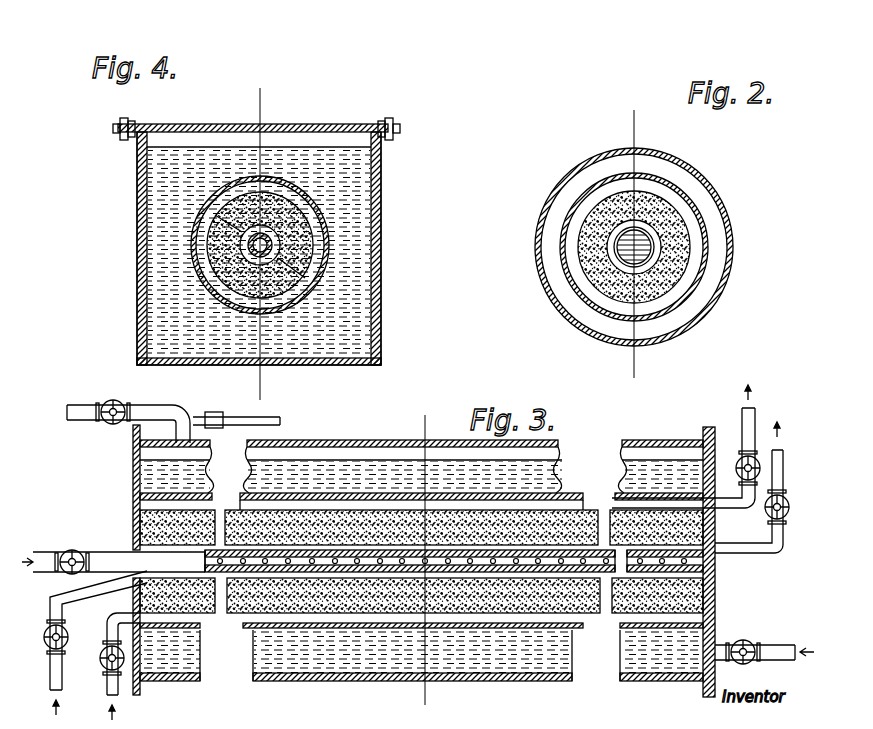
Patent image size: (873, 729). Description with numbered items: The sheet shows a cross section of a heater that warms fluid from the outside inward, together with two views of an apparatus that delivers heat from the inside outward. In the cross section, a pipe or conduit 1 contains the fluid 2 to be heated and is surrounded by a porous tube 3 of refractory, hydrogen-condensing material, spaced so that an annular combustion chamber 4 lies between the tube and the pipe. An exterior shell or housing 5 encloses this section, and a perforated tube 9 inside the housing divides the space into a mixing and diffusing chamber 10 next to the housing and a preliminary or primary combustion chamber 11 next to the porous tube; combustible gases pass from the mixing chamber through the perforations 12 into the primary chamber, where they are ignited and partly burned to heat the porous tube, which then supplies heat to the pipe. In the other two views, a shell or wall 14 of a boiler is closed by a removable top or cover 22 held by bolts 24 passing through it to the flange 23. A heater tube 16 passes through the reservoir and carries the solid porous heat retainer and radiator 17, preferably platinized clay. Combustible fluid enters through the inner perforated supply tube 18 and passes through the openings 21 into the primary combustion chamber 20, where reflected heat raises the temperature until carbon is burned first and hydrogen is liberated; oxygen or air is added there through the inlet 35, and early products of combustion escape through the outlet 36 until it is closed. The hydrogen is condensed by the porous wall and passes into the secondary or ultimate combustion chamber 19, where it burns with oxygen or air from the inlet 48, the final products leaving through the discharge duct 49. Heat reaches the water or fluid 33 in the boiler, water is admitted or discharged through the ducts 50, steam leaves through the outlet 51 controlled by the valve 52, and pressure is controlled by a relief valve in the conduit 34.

In FIG. 2, the pipe or conduit 1 is at (757, 250).
In FIG. 2, the fluid to be heated 2 is at (654, 264).
In FIG. 4, the porous tube 3 is at (260, 241).
In FIG. 2, the porous tube 3 is at (578, 229).
In FIG. 3, the porous tube 3 is at (237, 416).
In FIG. 2, the annular combustion chamber 4 is at (650, 225).
In FIG. 3, the annular combustion chamber 4 is at (423, 561).
In FIG. 2, the exterior shell or housing 5 is at (568, 174).
In FIG. 2, the perforated tube 9 is at (572, 280).
In FIG. 2, the mixing and diffusing chamber 10 is at (676, 318).
In FIG. 2, the preliminary or primary combustion chamber 11 is at (600, 293).
In FIG. 2, the perforations 12 is at (700, 214).
In FIG. 4, the shell or wall of fluid container 14 is at (188, 365).
In FIG. 3, the shell or wall of fluid container 14 is at (346, 681).
In FIG. 4, the heater tube 16 is at (326, 243).
In FIG. 3, the heater tube 16 is at (580, 492).
In FIG. 4, the porous heat retainer and radiator 17 is at (192, 233).
In FIG. 3, the porous heat retainer and radiator 17 is at (226, 600).
In FIG. 4, the inner perforated supply tube 18 is at (378, 270).
In FIG. 3, the inner perforated supply tube 18 is at (716, 574).
In FIG. 4, the ultimate or secondary combustion chamber 19 is at (310, 290).
In FIG. 3, the ultimate or secondary combustion chamber 19 is at (575, 500).
In FIG. 4, the primary or initial combustion chamber 20 is at (240, 245).
In FIG. 3, the primary or initial combustion chamber 20 is at (228, 562).
In FIG. 4, the perforations or openings 21 is at (238, 250).
In FIG. 3, the perforations or openings 21 is at (333, 567).
In FIG. 4, the removable top or cover 22 is at (325, 124).
In FIG. 3, the removable top or cover 22 is at (345, 440).
In FIG. 4, the flange 23 is at (118, 128).
In FIG. 4, the bolts 24 is at (120, 118).
In FIG. 4, the water or fluid 33 is at (160, 330).
In FIG. 3, the water or fluid 33 is at (258, 667).
In FIG. 3, the conduit 34 is at (280, 420).
In FIG. 3, the oxygen or air inlet 35 is at (50, 600).
In FIG. 3, the outlet 36 is at (770, 555).
In FIG. 3, the oxygen inlet 48 is at (107, 688).
In FIG. 3, the outlet for products of combustion 49 is at (742, 420).
In FIG. 3, the ducts 50 is at (788, 646).
In FIG. 3, the steam outlet 51 is at (138, 405).
In FIG. 3, the valve 52 is at (100, 423).